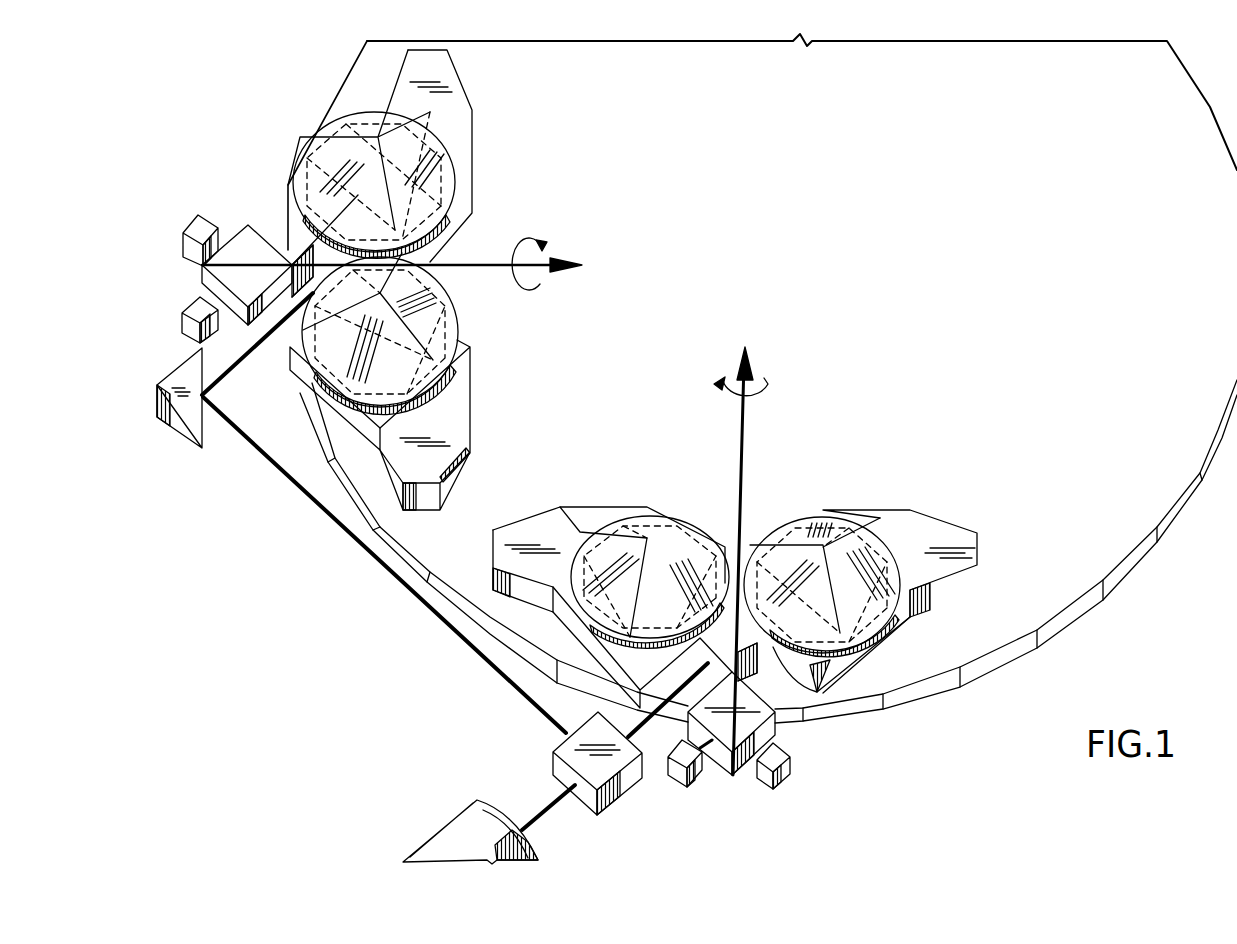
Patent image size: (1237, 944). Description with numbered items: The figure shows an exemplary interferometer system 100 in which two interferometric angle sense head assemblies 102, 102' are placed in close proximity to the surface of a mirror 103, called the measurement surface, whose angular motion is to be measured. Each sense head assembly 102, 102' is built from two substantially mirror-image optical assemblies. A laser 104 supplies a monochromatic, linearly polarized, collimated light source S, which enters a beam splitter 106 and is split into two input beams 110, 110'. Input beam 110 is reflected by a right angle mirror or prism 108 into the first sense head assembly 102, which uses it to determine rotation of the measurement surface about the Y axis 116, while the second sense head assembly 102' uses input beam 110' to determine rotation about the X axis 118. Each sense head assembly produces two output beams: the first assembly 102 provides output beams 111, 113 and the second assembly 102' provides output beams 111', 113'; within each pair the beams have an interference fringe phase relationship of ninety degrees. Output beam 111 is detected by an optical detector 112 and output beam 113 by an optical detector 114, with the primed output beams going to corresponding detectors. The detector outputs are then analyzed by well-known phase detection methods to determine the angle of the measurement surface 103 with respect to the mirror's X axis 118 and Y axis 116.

The interferometer system 100 is at (298, 676).
The interferometric angle sense head assembly 102 is at (435, 280).
The interferometric angle sense head assembly 102' is at (735, 581).
The mirror 103 is at (1096, 498).
The laser 104 is at (443, 818).
The beam splitter 106 is at (620, 788).
The right angle mirror or prism 108 is at (173, 417).
The input beam 110 is at (384, 513).
The input beam 110' is at (589, 705).
The output beam 111 is at (251, 232).
The output beam 111' is at (721, 755).
The optical detector 112 is at (190, 224).
The output beam 113 is at (212, 295).
The output beam 113' is at (811, 760).
The optical detector 114 is at (190, 323).
The Y axis 116 is at (493, 265).
The X axis 118 is at (745, 430).
The light source S is at (544, 815).